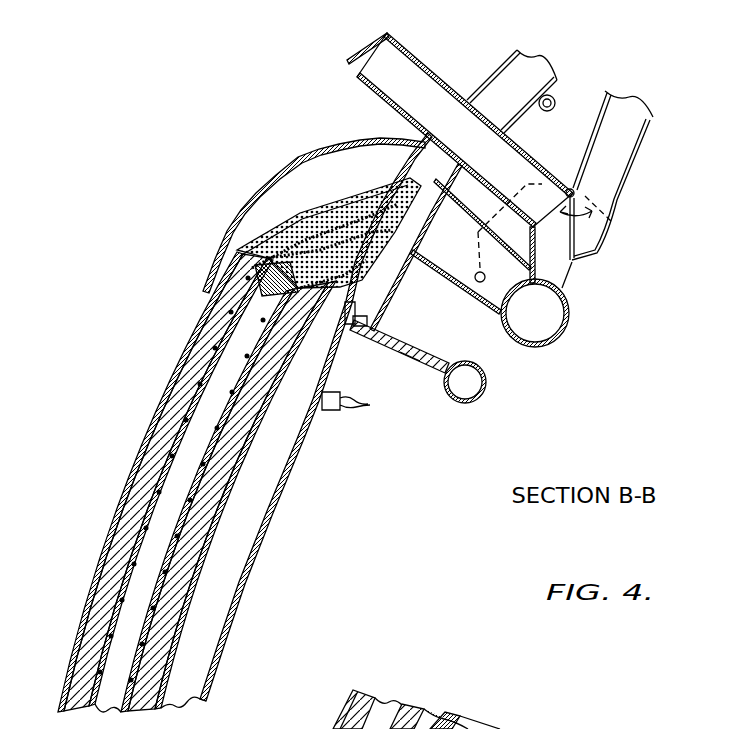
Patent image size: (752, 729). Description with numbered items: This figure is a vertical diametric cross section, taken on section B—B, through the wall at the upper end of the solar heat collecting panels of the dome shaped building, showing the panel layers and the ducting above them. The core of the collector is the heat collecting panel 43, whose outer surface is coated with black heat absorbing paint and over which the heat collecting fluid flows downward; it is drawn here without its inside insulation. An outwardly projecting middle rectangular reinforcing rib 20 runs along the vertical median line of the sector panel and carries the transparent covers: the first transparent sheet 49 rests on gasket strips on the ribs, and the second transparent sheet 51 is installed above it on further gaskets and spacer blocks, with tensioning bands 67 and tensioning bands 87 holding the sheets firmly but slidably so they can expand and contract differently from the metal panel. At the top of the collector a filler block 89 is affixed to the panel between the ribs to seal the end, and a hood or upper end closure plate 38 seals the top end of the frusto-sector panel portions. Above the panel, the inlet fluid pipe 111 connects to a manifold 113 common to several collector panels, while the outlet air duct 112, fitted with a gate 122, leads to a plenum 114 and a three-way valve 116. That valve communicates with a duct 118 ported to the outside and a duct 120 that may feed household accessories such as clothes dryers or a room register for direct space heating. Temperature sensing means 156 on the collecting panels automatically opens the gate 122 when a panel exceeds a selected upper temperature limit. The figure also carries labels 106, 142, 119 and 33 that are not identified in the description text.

The duct 118 is at (432, 64).
The hood or upper end closure plate 38 is at (263, 193).
The tensioning bands 87 is at (306, 202).
The filler block 89 is at (429, 185).
The three-way valve 116 is at (558, 188).
The duct 120 is at (616, 208).
The inner wall 106 is at (244, 330).
The gate 122 is at (448, 280).
The outlet air duct 112 is at (470, 303).
The plenum 114 is at (564, 332).
The bracket 142 is at (356, 336).
The inlet fluid pipe 111 is at (424, 371).
The manifold 113 is at (480, 391).
The tensioning bands 67 is at (201, 456).
The temperature sensing means 156 is at (330, 414).
The middle rectangular reinforcing rib 20 is at (244, 521).
The transparent sheet 51 is at (110, 586).
The heat collecting panel 43 is at (260, 548).
The transparent sheet 49 is at (175, 597).
The hose 119 is at (433, 720).
The section member 33 is at (494, 718).